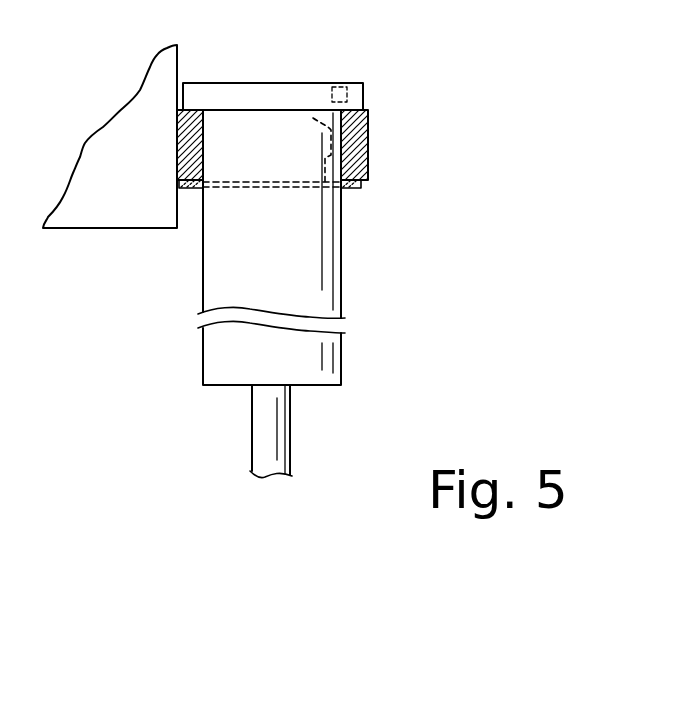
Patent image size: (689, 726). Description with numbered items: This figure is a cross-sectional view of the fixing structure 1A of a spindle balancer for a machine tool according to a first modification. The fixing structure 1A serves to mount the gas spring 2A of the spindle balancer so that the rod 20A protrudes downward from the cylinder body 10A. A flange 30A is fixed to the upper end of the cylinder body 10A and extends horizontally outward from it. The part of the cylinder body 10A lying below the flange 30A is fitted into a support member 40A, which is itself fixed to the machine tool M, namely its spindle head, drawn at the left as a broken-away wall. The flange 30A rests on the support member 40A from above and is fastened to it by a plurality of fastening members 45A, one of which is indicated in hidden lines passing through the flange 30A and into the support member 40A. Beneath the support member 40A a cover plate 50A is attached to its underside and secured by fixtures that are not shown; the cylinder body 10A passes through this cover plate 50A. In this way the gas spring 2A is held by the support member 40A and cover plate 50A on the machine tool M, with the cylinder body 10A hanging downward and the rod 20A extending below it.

The fixing structure 1A is at (419, 86).
The gas spring 2A is at (342, 269).
The cylinder body 10A is at (203, 345).
The rod 20A is at (290, 418).
The flange 30A is at (327, 83).
The support member 40A is at (368, 150).
The fastening member 45A is at (313, 118).
The cover plate 50A is at (350, 185).
The machine tool M is at (105, 227).